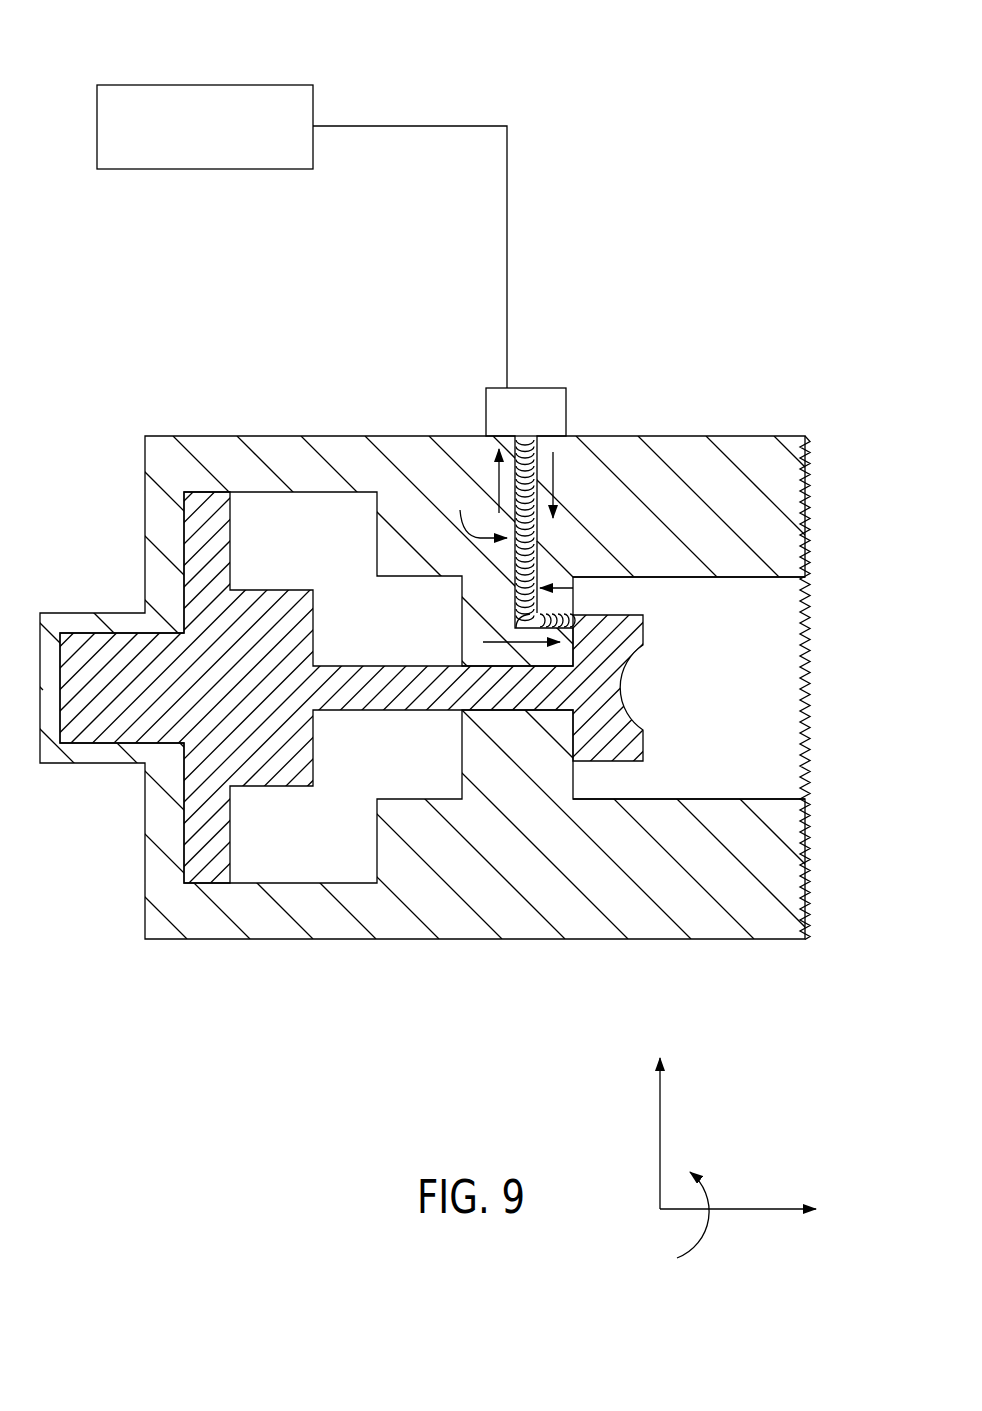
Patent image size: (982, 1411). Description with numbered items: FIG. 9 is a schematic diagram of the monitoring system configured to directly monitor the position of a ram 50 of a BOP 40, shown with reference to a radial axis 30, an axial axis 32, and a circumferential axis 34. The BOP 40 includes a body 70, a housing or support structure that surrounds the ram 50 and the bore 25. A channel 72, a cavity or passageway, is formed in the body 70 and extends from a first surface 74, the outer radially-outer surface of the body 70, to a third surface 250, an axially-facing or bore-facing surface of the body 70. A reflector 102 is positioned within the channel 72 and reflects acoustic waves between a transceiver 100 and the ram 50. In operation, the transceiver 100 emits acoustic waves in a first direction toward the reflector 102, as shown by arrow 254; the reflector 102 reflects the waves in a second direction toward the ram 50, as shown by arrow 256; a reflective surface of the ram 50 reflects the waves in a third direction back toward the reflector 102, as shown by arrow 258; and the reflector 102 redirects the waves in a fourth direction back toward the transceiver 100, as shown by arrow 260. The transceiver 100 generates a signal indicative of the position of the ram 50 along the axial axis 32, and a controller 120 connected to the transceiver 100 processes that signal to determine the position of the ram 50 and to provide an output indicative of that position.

The controller 120 is at (313, 96).
The transceiver 100 is at (540, 388).
The BOP 40 is at (710, 333).
The first surface 74 is at (439, 436).
The body 70 is at (626, 436).
The ram 50 is at (628, 628).
The reflector 102 is at (516, 620).
The arrow 260 is at (497, 485).
The channel 72 is at (479, 510).
The arrow 254 is at (553, 463).
The arrow 258 is at (560, 588).
The third surface 250 is at (575, 604).
The arrow 256 is at (492, 640).
The bore 25 is at (722, 698).
The radial axis 30 is at (660, 1137).
The axial axis 32 is at (733, 1209).
The circumferential axis 34 is at (702, 1222).